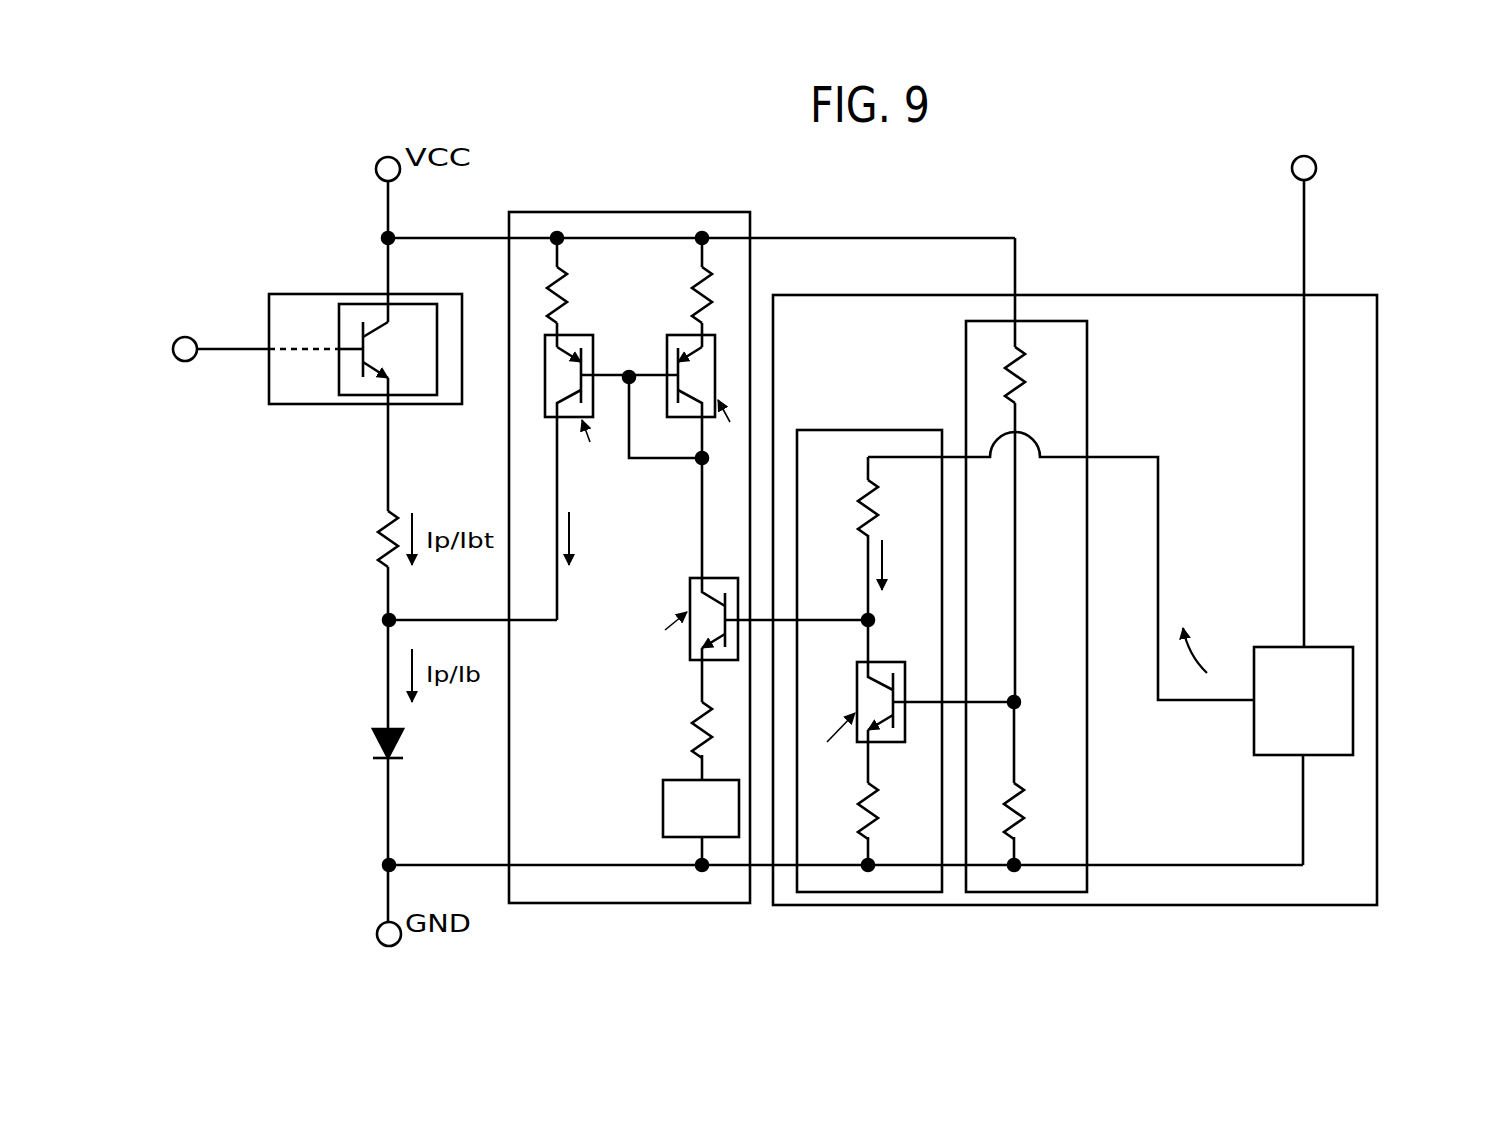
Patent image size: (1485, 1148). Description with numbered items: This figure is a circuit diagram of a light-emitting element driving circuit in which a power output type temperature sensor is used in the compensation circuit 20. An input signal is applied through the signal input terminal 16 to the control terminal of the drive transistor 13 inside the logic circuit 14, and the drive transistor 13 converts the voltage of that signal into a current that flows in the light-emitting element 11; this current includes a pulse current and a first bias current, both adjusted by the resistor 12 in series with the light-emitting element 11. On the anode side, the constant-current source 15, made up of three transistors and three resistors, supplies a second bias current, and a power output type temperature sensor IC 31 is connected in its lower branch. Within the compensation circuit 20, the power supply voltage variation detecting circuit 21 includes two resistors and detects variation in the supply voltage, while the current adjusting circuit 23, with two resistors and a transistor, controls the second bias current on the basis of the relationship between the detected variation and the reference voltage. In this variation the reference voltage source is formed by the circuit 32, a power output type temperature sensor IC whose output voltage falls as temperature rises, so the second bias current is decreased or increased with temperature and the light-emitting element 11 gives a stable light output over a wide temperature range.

The light-emitting element 11 is at (369, 739).
The resistor 12 is at (364, 540).
The drive transistor 13 is at (336, 377).
The logic circuit 14 is at (343, 333).
The constant-current source 15 is at (688, 556).
The signal input terminal 16 is at (187, 334).
The compensation circuit 20 is at (1118, 553).
The power supply voltage variation detecting circuit 21 is at (1038, 318).
The current adjusting circuit 23 is at (867, 895).
The power output type temperature sensor IC 31 is at (664, 835).
The circuit producing a voltage depending on temperature 32 is at (1322, 760).